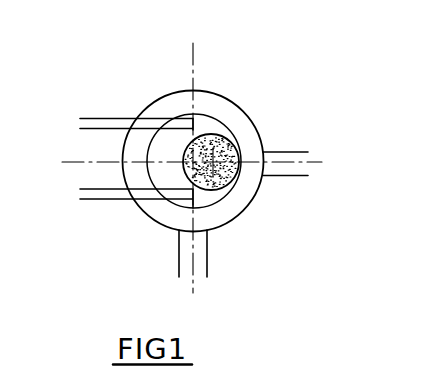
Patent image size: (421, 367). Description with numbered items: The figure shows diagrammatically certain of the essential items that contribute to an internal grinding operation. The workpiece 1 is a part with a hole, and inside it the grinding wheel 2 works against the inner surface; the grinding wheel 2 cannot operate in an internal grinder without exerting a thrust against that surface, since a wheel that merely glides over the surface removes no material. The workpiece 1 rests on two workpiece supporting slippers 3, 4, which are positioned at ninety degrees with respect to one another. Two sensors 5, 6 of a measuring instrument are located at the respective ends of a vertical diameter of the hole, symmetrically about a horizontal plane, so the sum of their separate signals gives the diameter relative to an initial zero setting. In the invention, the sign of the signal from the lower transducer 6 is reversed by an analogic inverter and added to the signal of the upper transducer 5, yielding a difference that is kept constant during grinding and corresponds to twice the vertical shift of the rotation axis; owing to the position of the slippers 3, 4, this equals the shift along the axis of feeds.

The workpiece 1 is at (241, 128).
The grinding wheel 2 is at (233, 147).
The workpiece supporting slipper 3 is at (288, 168).
The workpiece supporting slipper 4 is at (198, 246).
The sensor (upper transducer) 5 is at (107, 120).
The sensor (lower transducer) 6 is at (105, 197).